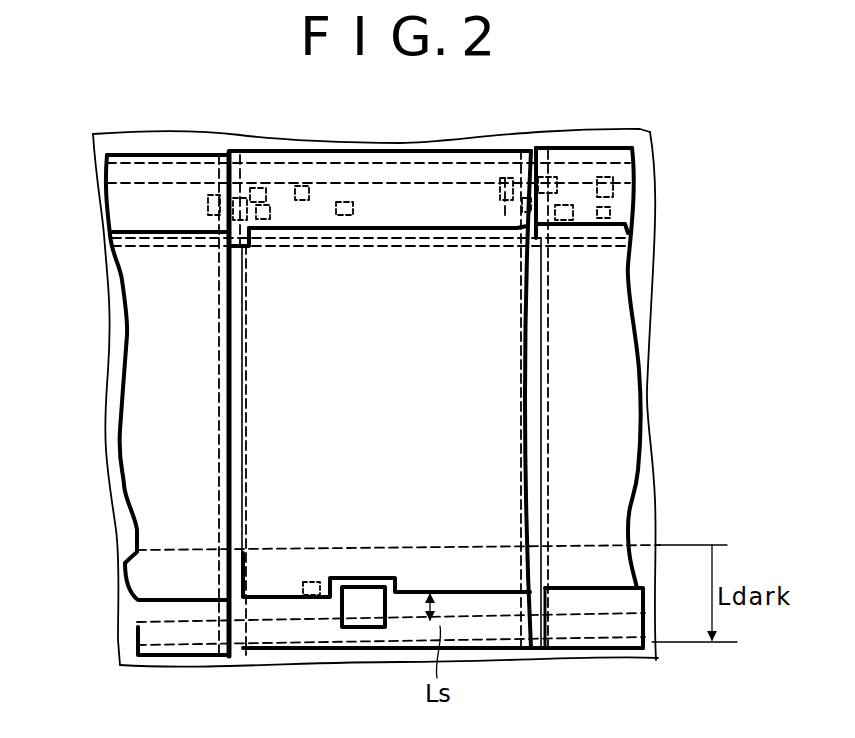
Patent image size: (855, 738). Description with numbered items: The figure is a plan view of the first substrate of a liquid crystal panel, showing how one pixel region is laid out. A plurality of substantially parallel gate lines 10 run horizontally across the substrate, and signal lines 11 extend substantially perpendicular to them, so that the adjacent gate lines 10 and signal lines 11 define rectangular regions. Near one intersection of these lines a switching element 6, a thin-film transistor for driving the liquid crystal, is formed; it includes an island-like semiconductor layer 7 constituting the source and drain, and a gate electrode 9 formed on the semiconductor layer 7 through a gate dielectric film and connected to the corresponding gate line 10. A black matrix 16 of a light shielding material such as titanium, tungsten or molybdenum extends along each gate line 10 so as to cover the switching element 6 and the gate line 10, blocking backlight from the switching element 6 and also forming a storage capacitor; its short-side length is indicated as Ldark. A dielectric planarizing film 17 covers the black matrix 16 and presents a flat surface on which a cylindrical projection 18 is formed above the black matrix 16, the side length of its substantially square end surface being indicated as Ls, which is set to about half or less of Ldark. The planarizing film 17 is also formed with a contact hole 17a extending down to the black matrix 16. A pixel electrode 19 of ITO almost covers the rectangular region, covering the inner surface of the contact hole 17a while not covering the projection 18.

The switching element 6 is at (298, 233).
The semiconductor layer 7 is at (303, 197).
The gate electrode 9 is at (268, 190).
The gate line 10 is at (640, 152).
The signal line 11 is at (537, 338).
The black matrix 16 is at (447, 144).
The planarizing film 17 is at (652, 411).
The contact hole 17a is at (310, 596).
The projection 18 is at (361, 618).
The pixel electrode 19 is at (637, 366).